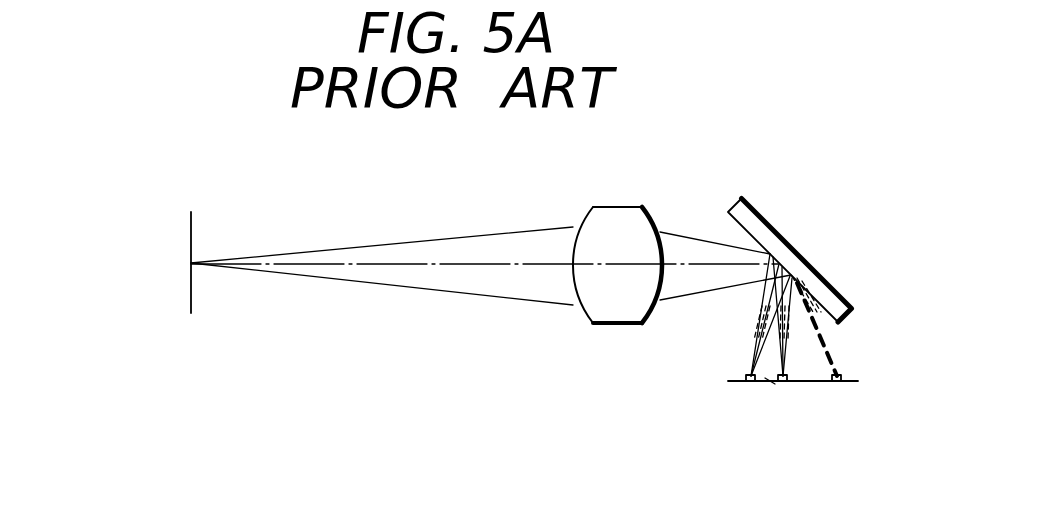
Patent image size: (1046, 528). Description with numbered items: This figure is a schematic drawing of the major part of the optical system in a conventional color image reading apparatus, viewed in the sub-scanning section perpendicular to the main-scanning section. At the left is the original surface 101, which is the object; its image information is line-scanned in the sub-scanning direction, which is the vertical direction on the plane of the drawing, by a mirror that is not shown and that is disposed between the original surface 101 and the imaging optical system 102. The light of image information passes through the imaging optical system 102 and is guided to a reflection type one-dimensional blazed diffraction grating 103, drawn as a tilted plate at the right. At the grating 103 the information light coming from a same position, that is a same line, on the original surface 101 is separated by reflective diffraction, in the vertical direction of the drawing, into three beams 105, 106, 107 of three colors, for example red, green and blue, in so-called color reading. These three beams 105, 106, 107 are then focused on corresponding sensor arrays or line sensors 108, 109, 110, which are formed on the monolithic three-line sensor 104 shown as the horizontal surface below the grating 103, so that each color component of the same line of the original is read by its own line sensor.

The original surface 101 is at (191, 228).
The imaging optical system 102 is at (615, 207).
The reflection type one-dimensional blazed diffraction grating 103 is at (788, 245).
The monolithic 3-line sensor 104 is at (843, 385).
The beam 105 is at (755, 342).
The beam 106 is at (770, 381).
The beam 107 is at (823, 342).
The line sensor 108 is at (748, 383).
The line sensor 109 is at (783, 383).
The line sensor 110 is at (838, 387).